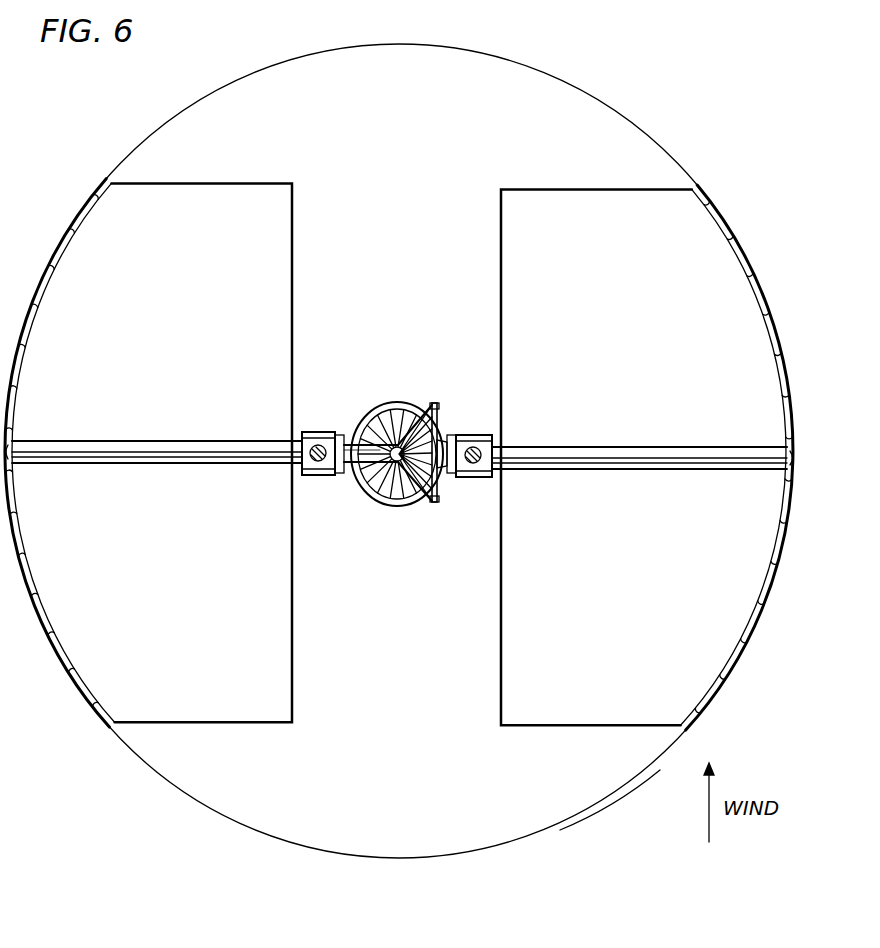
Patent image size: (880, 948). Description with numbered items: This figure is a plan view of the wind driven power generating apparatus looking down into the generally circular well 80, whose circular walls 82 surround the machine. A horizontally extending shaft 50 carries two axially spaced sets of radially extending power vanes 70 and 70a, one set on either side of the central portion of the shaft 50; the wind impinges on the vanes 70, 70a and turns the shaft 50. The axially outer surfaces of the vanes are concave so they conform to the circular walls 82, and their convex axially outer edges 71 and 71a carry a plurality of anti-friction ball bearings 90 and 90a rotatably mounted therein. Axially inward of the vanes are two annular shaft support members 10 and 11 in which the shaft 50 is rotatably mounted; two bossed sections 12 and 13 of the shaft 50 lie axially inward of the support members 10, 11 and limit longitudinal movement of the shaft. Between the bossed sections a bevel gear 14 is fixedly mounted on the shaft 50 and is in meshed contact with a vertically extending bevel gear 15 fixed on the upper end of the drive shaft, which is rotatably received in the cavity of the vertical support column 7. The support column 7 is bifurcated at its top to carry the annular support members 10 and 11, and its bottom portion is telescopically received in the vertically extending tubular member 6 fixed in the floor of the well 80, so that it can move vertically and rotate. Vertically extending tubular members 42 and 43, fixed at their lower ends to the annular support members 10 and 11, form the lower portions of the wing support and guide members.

The tubular member 6 is at (407, 403).
The vertical support column 7 is at (390, 410).
The annular shaft support member 10 is at (300, 436).
The annular shaft support member 11 is at (495, 432).
The bossed section 12 is at (448, 433).
The bossed section 13 is at (341, 433).
The bevel gear 14 is at (434, 494).
The bevel gear 15 is at (381, 488).
The vertically extending tubular member 42 is at (314, 441).
The vertically extending tubular member 43 is at (473, 443).
The shaft 50 is at (249, 464).
The power vanes 70 is at (553, 189).
The power vanes 70a is at (255, 188).
The axially outer edge 71 is at (717, 697).
The axially outer edge 71a is at (85, 208).
The well 80 is at (233, 792).
The circular walls 82 is at (616, 786).
The ball bearings 90 is at (712, 206).
The ball bearings 90a is at (95, 704).